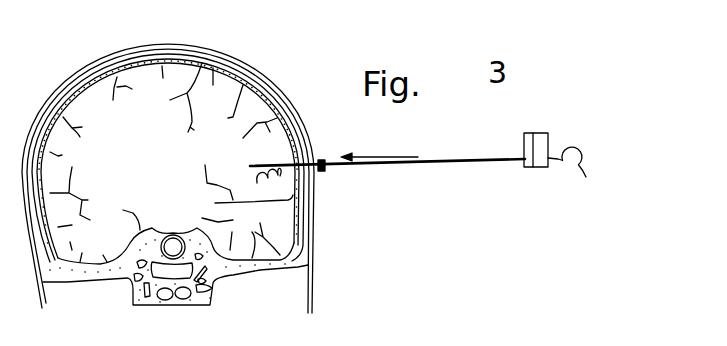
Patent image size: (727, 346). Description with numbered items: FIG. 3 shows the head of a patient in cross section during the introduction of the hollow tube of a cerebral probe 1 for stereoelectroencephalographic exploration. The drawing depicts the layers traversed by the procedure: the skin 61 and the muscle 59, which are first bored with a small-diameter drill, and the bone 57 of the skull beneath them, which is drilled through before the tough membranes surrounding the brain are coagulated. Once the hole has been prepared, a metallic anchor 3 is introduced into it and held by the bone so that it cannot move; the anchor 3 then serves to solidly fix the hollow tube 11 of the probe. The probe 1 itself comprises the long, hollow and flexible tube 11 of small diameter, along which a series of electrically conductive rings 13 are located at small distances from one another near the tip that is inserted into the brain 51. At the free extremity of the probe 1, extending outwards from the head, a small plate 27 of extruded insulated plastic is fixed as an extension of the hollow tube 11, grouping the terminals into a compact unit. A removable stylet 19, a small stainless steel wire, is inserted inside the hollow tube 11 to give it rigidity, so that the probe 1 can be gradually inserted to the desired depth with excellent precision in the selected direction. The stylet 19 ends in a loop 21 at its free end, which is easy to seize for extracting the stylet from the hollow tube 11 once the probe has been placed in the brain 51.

The cerebral probe 1 is at (448, 150).
The metallic anchor 3 is at (326, 151).
The hollow tube 11 is at (367, 167).
The electrically conductive rings 13 is at (264, 182).
The removable stylet 19 is at (553, 168).
The loop 21 is at (582, 170).
The small plate 27 is at (528, 137).
The brain 51 is at (227, 67).
The bone 57 is at (255, 78).
The muscle 59 is at (278, 80).
The skin 61 is at (302, 107).